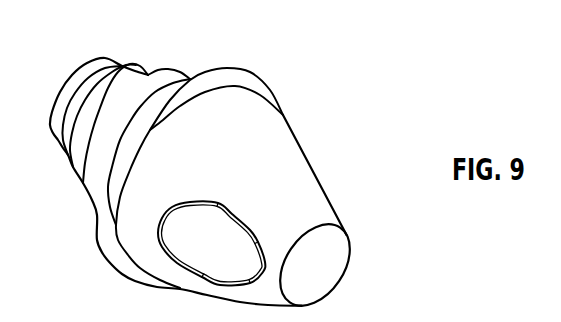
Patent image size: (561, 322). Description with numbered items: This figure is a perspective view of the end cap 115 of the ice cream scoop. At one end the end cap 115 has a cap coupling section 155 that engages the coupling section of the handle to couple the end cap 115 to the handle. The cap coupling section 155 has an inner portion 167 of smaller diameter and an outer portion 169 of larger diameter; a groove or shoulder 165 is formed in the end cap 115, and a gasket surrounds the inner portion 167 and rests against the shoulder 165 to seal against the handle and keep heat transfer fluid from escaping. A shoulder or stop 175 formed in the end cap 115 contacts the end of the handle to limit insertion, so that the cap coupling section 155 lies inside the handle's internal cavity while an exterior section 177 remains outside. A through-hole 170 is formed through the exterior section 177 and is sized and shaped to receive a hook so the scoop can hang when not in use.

The end cap 115 is at (340, 64).
The cap coupling section 155 is at (158, 94).
The shoulder 165 is at (86, 196).
The inner portion 167 is at (95, 115).
The outer portion 169 is at (122, 65).
The through-hole 170 is at (262, 257).
The stop 175 is at (218, 68).
The exterior section 177 is at (312, 190).